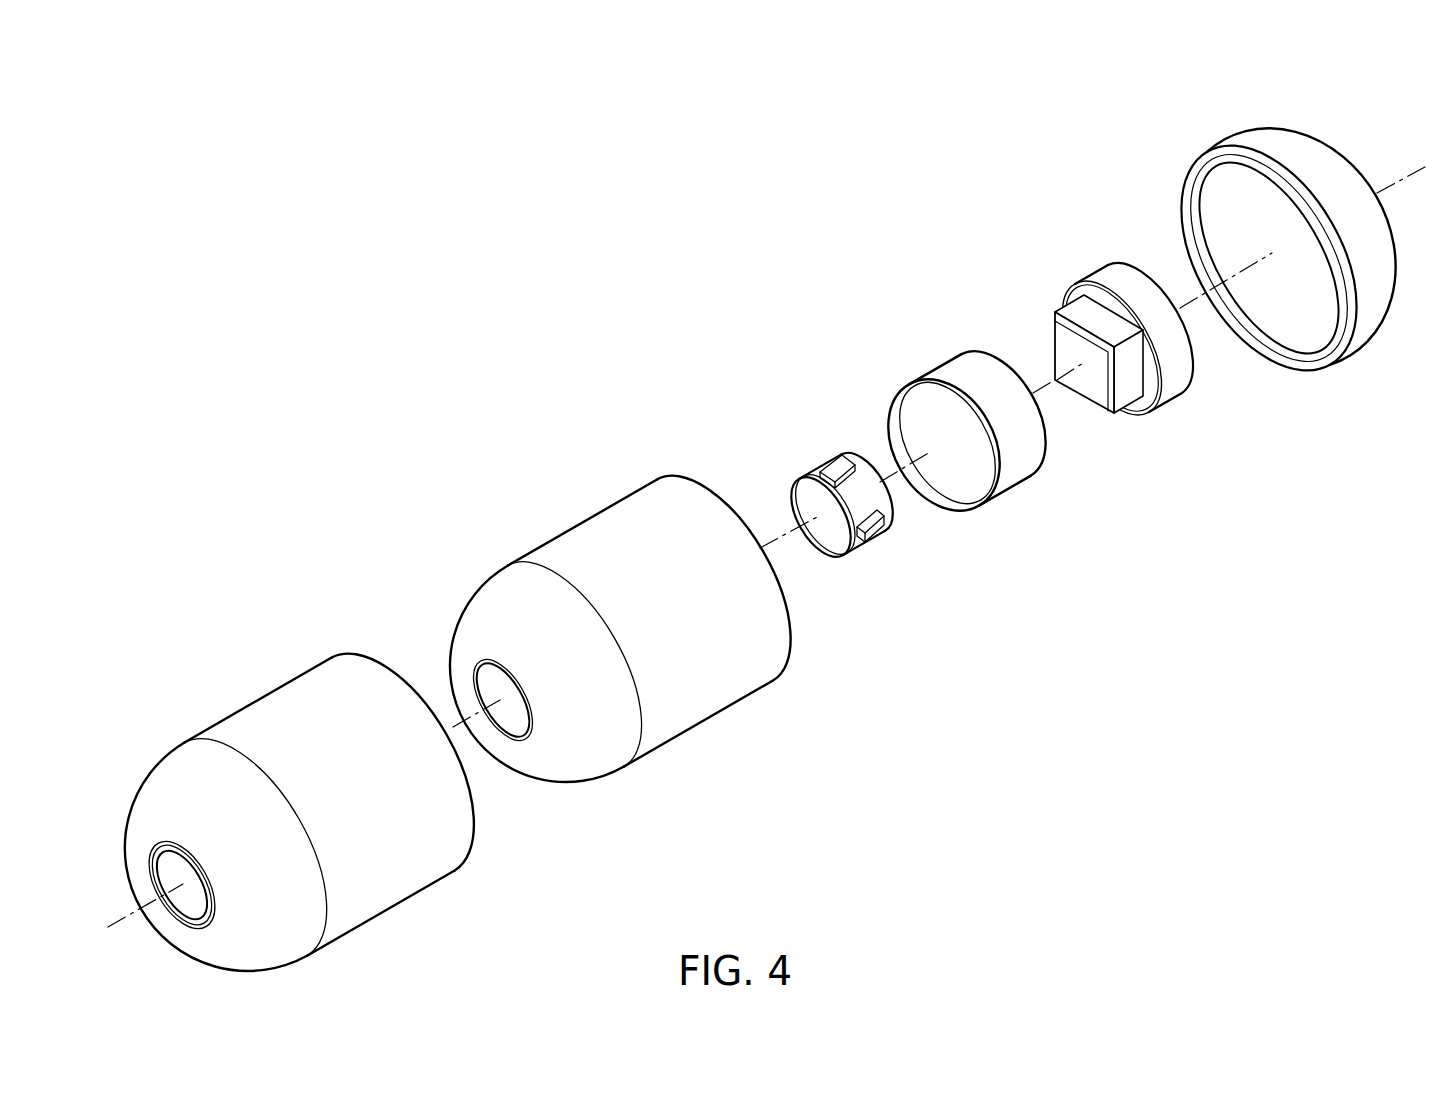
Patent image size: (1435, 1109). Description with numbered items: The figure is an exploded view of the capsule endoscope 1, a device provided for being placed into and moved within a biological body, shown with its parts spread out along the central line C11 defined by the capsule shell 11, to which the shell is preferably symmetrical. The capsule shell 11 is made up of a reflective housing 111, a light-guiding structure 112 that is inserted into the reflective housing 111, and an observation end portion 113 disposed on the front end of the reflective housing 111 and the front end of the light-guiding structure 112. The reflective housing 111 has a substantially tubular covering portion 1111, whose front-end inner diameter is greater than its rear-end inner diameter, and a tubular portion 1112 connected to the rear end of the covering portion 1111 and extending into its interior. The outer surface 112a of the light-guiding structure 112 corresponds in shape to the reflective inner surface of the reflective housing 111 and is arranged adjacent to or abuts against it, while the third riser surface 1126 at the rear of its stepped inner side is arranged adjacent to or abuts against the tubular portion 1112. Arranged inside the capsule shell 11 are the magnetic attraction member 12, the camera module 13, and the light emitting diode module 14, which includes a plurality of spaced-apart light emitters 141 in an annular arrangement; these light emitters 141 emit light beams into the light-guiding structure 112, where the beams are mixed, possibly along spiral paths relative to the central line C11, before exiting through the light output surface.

The capsule endoscope 1 is at (200, 588).
The capsule shell 11 is at (172, 140).
The reflective housing 111 is at (299, 812).
The covering portion 1111 is at (385, 888).
The tubular portion 1112 is at (191, 896).
The light-guiding structure 112 is at (585, 617).
The outer surface 112a is at (704, 683).
The third riser surface 1126 is at (478, 676).
The observation end portion 113 is at (1276, 135).
The magnetic attraction member 12 is at (944, 360).
The camera module 13 is at (1101, 264).
The light emitting diode module 14 is at (842, 500).
The light emitters 141 is at (841, 463).
The central line C11 is at (1416, 170).